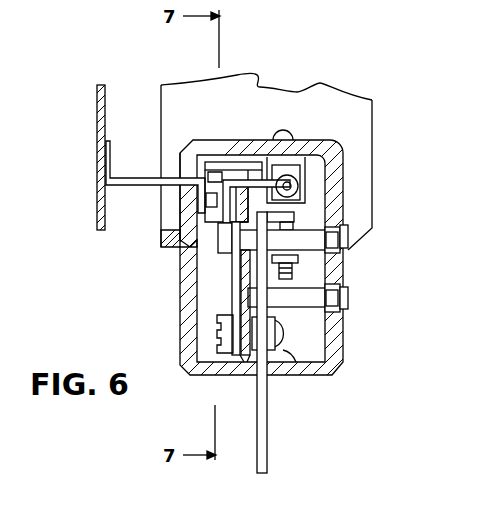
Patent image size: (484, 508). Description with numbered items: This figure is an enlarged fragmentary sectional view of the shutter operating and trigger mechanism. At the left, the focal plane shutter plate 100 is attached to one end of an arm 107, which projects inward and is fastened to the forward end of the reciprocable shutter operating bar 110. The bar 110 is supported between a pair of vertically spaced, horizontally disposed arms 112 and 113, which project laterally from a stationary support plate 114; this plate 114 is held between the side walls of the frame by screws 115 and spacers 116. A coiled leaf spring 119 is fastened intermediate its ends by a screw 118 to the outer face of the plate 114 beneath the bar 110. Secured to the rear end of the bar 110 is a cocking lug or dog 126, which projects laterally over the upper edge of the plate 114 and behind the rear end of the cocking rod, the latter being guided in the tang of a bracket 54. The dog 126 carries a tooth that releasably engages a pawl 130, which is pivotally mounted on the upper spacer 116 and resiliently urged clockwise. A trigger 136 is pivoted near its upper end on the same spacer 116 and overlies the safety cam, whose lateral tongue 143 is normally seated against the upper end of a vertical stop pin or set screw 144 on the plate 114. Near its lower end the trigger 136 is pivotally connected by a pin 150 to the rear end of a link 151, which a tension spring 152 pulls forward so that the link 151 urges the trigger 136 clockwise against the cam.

The bracket 54 is at (302, 157).
The focal plane shutter plate 100 is at (97, 107).
The arm 107 is at (129, 177).
The shutter operating bar 110 is at (206, 200).
The arm 112 is at (216, 143).
The arm 113 is at (195, 247).
The stationary support plate 114 is at (246, 362).
The screw 115 is at (347, 238).
The spacer 116 is at (340, 252).
The screw 118 is at (217, 347).
The coiled leaf spring 119 is at (241, 290).
The cocking lug or dog 126 is at (262, 158).
The pawl 130 is at (232, 268).
The trigger 136 is at (268, 437).
The lateral tongue 143 is at (300, 214).
The stop pin or set screw 144 is at (298, 266).
The pin 150 is at (284, 340).
The link 151 is at (300, 362).
The tension spring 152 is at (300, 188).